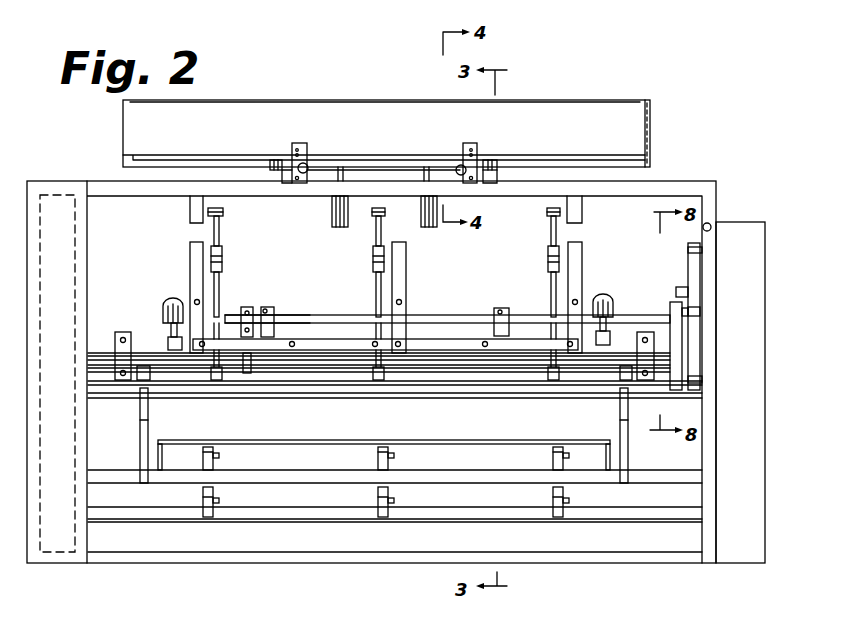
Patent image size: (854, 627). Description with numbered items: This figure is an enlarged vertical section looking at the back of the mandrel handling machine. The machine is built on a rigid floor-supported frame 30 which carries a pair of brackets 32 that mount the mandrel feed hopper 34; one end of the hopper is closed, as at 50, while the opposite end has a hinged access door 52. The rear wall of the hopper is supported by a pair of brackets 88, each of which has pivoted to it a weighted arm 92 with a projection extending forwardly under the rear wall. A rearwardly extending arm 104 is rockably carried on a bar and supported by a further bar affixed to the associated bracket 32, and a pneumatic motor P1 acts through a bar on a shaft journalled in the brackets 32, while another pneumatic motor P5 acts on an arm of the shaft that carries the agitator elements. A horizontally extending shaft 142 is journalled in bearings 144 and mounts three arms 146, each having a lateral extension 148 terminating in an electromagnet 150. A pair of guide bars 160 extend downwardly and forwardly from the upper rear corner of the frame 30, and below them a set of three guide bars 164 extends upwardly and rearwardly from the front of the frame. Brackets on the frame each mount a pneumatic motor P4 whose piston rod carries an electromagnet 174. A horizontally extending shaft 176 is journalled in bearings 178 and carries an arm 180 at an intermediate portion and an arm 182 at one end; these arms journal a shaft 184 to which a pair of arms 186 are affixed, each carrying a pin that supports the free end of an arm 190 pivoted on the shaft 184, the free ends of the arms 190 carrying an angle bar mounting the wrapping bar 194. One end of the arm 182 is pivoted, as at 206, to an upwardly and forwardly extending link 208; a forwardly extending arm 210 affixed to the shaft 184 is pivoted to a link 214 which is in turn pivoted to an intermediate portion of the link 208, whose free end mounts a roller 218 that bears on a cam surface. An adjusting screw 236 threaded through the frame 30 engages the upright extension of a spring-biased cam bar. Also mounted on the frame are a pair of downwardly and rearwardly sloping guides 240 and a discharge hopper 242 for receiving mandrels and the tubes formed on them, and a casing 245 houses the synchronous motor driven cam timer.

The frame 30 is at (678, 186).
The brackets 32 is at (278, 174).
The mandrel feed hopper 34 is at (376, 110).
The closed end 50 is at (122, 125).
The hinged access door 52 is at (650, 128).
The brackets 88 is at (297, 146).
The weighted arm 92 is at (308, 152).
The rearwardly extending arm 104 is at (276, 160).
The shaft 142 is at (445, 373).
The bearings 144 is at (143, 372).
The arms 146 is at (221, 280).
The lateral extension 148 is at (221, 238).
The electromagnet 150 is at (224, 212).
The guide bars 160 is at (190, 212).
The guide bars 164 is at (196, 260).
The electromagnet 174 is at (170, 343).
The shaft 176 is at (353, 360).
The bearings 178 is at (122, 338).
The arm 180 is at (246, 312).
The arm 182 is at (677, 345).
The shaft 184 is at (323, 322).
The arms 186 is at (279, 315).
The arm 190 is at (265, 307).
The wrapping bar 194 is at (422, 350).
The pivotal connection 206 is at (702, 380).
The link 208 is at (695, 278).
The forwardly extending arm 210 is at (700, 314).
The link 214 is at (678, 288).
The roller 218 is at (702, 251).
The adjusting screw 236 is at (711, 224).
The guides 240 is at (140, 447).
The discharge hopper 242 is at (495, 441).
The casing 245 is at (733, 553).
The pneumatic motor P1 is at (336, 233).
The pneumatic motor P4 is at (162, 303).
The pneumatic motor P5 is at (440, 229).